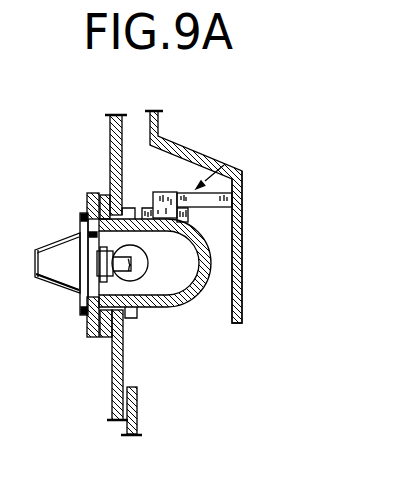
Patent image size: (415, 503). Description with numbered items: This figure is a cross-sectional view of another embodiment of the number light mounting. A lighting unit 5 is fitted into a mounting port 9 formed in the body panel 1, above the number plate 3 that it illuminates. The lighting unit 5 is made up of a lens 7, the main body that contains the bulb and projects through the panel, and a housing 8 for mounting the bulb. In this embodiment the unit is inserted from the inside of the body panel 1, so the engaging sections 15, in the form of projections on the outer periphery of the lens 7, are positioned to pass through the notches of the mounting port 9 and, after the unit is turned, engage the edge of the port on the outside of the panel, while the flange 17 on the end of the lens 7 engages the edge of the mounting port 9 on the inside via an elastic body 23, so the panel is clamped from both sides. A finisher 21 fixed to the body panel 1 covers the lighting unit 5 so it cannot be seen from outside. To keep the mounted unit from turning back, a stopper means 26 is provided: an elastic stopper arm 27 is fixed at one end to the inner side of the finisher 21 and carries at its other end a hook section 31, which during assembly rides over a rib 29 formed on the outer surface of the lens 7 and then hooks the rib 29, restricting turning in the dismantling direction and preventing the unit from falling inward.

The body panel 1 is at (109, 119).
The number plate 3 is at (132, 389).
The lighting unit 5 is at (43, 234).
The lens 7 is at (176, 304).
The housing 8 is at (51, 286).
The mounting port 9 is at (109, 206).
The engaging sections 15 is at (122, 209).
The flange 17 is at (88, 199).
The finisher 21 is at (203, 160).
The elastic body 23 is at (106, 338).
The stopper means 26 is at (220, 193).
The stopper arm 27 is at (242, 174).
The rib 29 is at (188, 216).
The hook section 31 is at (171, 194).